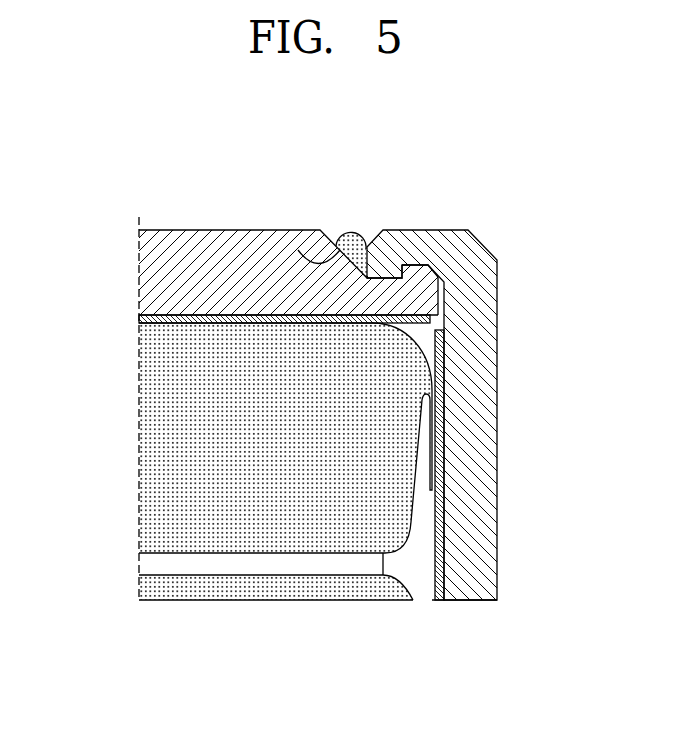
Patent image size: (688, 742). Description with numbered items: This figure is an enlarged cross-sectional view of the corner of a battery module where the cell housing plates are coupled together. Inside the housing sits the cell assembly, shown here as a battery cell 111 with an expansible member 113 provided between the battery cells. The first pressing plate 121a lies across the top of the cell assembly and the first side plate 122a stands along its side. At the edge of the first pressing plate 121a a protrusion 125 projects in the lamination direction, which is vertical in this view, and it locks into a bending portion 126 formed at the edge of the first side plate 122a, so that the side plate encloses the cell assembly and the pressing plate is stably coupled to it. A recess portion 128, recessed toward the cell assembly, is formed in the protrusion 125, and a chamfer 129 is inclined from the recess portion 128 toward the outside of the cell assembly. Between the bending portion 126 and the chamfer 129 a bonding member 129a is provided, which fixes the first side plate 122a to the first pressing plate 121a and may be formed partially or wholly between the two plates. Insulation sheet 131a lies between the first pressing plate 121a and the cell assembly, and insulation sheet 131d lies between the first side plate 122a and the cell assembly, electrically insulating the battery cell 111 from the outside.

The battery cell 111 is at (144, 425).
The expansible member 113 is at (143, 563).
The first pressing plate 121a is at (142, 268).
The first side plate 122a is at (497, 425).
The protrusion 125 is at (386, 281).
The bending portion 126 is at (413, 230).
The recess portion 128 is at (403, 295).
The chamfer 129 is at (298, 251).
The bonding member 129a is at (351, 237).
The insulation sheet 131a is at (143, 317).
The insulation sheet 131d is at (444, 503).